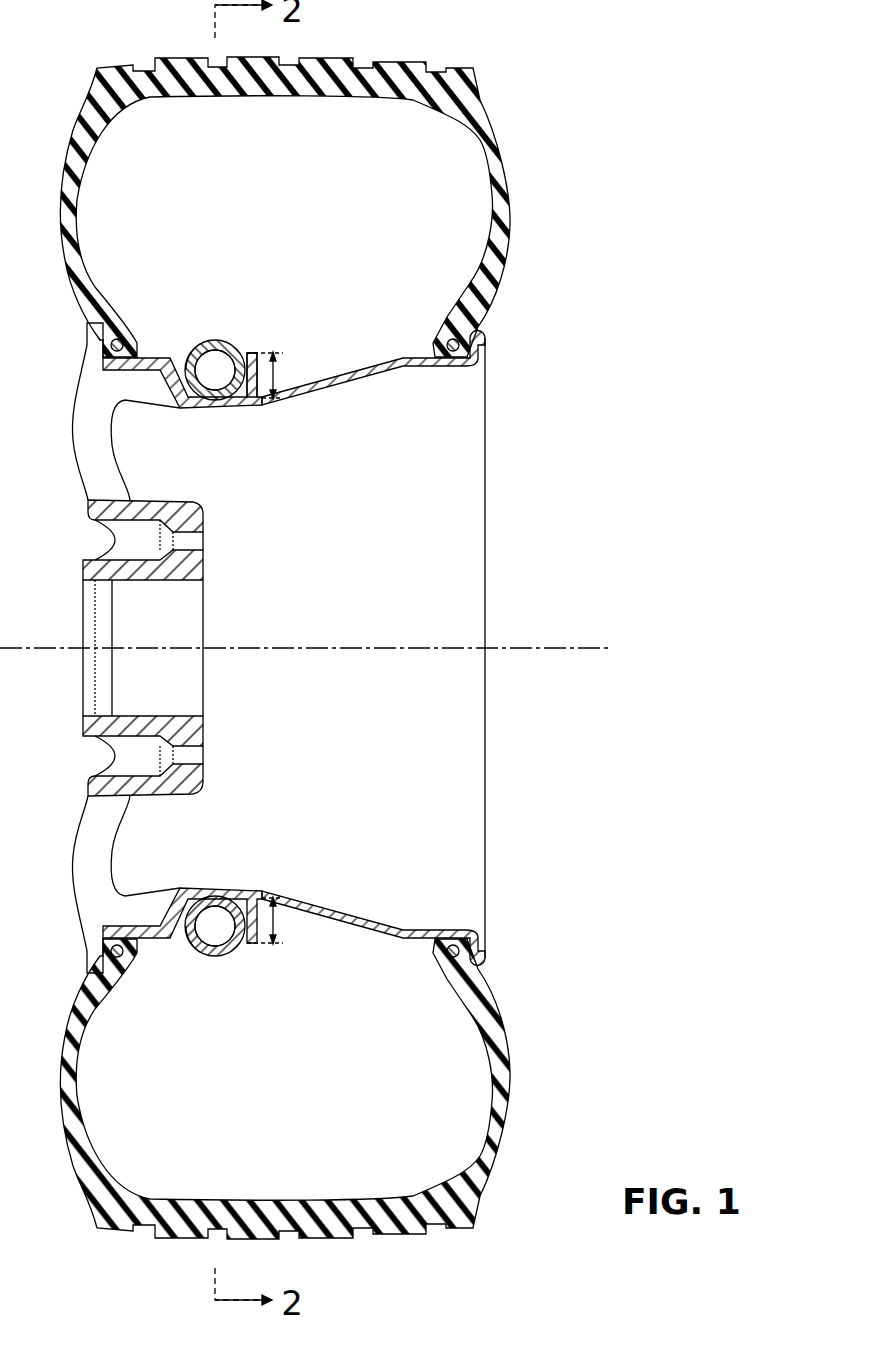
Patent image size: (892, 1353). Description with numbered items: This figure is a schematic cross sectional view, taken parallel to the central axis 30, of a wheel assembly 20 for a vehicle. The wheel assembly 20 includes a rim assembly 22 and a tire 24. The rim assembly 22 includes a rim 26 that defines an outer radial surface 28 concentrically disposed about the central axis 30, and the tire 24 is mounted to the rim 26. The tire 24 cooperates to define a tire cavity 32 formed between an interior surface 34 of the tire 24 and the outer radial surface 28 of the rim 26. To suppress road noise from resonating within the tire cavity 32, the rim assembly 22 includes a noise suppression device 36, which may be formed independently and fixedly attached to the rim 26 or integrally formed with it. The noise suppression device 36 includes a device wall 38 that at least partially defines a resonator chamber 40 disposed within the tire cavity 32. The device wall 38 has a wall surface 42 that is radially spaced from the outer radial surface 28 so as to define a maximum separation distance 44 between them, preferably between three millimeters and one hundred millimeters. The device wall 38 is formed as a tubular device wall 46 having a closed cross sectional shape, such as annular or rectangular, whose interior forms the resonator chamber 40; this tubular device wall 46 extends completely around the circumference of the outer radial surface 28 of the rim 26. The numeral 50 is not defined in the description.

The wheel assembly 20 is at (546, 86).
The rim assembly 22 is at (500, 390).
The tire 24 is at (514, 196).
The rim 26 is at (488, 522).
The outer radial surface 28 is at (330, 380).
The central axis 30 is at (576, 640).
The tire cavity 32 is at (275, 652).
The interior surface 34 is at (326, 97).
The noise suppression device 36 is at (190, 344).
The device wall 38 is at (255, 409).
The resonator chamber 40 is at (200, 640).
The wall surface 42 is at (216, 340).
The maximum separation distance 44 is at (279, 377).
The tubular device wall 46 is at (186, 372).
The O-ring core 50 is at (228, 342).